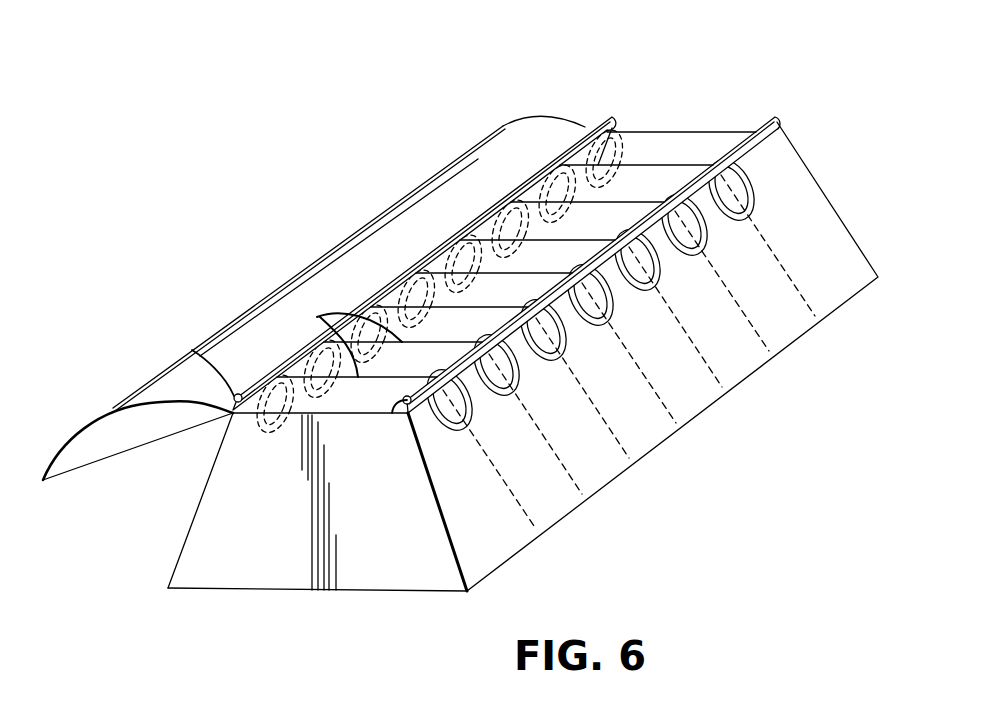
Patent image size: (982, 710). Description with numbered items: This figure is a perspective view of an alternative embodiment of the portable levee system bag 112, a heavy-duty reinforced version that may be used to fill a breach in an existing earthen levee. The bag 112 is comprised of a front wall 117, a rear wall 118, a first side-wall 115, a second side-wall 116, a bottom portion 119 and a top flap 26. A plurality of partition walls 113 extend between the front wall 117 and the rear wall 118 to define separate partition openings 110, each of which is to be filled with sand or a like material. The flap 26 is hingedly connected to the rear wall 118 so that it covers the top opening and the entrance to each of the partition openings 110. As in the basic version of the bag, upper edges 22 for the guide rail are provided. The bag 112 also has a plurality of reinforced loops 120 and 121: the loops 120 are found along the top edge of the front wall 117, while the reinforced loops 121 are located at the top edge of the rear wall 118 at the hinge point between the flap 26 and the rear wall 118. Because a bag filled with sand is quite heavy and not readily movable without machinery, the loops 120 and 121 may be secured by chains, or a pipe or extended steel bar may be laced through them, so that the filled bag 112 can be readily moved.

The portable levee system bag 112 is at (764, 97).
The reinforced loops 121 is at (587, 172).
The second side-wall 116 is at (688, 143).
The front wall 117 is at (783, 160).
The reinforced loops 120 is at (763, 200).
The top flap 26 is at (463, 159).
The partition walls 113 is at (317, 317).
The upper edges 22 is at (194, 352).
The rear wall 118 is at (200, 493).
The first side-wall 115 is at (277, 560).
The bottom portion 119 is at (412, 592).
The partition openings 110 is at (799, 259).